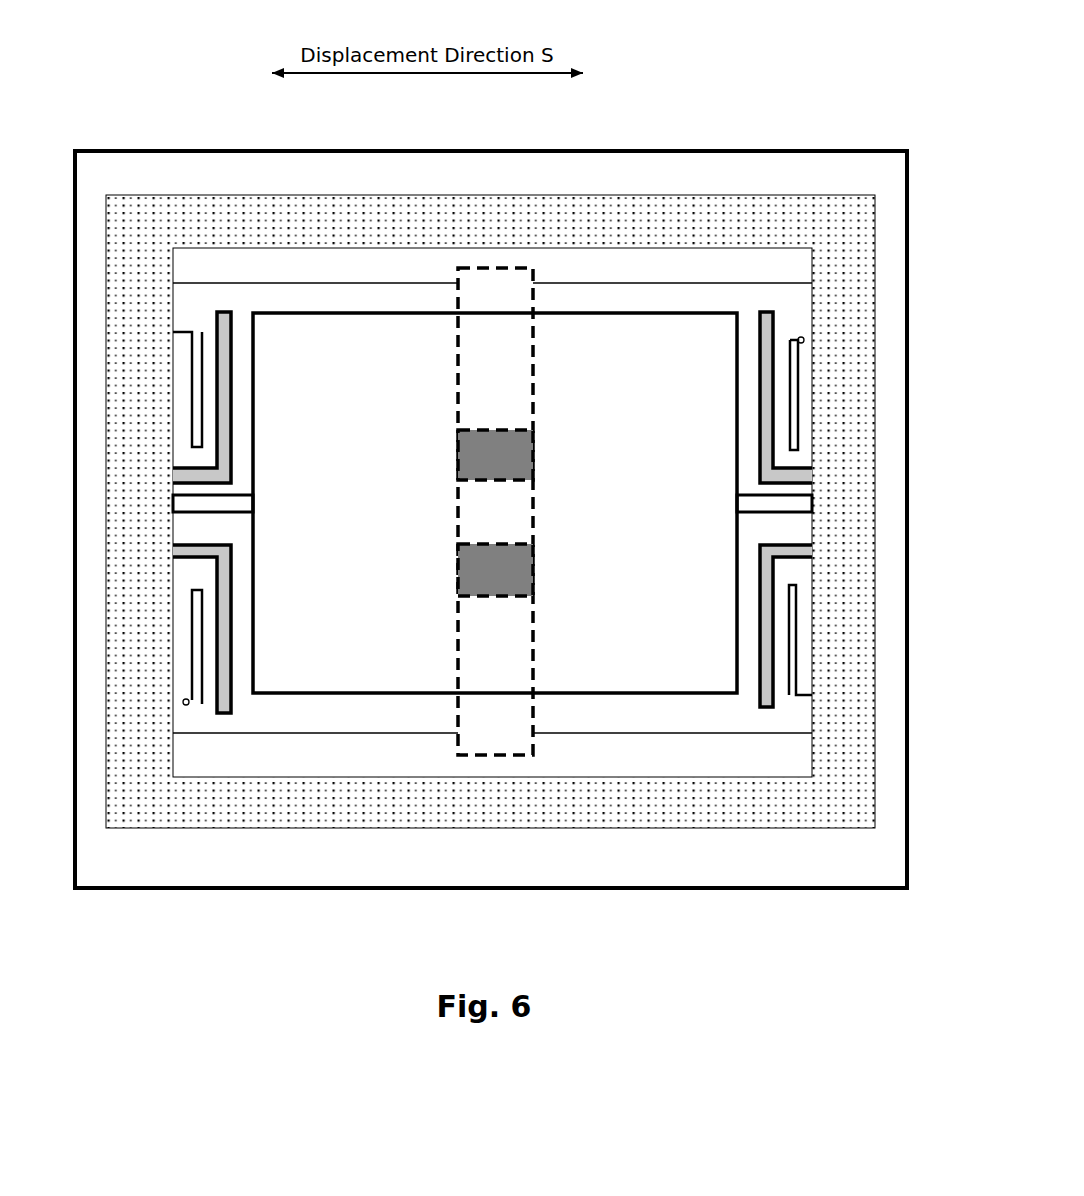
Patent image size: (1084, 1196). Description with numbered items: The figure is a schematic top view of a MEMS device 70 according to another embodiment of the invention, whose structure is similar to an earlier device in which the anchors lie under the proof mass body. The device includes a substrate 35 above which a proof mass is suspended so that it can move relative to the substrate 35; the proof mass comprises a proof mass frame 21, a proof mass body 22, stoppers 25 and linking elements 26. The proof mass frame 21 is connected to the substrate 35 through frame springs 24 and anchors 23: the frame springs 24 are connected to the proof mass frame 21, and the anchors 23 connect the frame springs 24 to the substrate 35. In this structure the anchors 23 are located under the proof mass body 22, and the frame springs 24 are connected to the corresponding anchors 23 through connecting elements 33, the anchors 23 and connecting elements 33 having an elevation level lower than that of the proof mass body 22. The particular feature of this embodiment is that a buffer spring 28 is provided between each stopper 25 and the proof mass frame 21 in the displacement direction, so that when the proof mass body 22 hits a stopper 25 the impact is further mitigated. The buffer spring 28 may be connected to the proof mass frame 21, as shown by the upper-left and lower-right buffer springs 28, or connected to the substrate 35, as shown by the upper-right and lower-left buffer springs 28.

The MEMS device 70 is at (828, 79).
The substrate 35 is at (328, 891).
The proof mass frame 21 is at (540, 212).
The frame spring 24 is at (335, 283).
The proof mass body 22 is at (611, 561).
The connecting element 33 is at (486, 382).
The anchor 23 is at (486, 466).
The stopper 25 is at (224, 311).
The buffer spring 28 is at (198, 327).
The linking element 26 is at (236, 514).